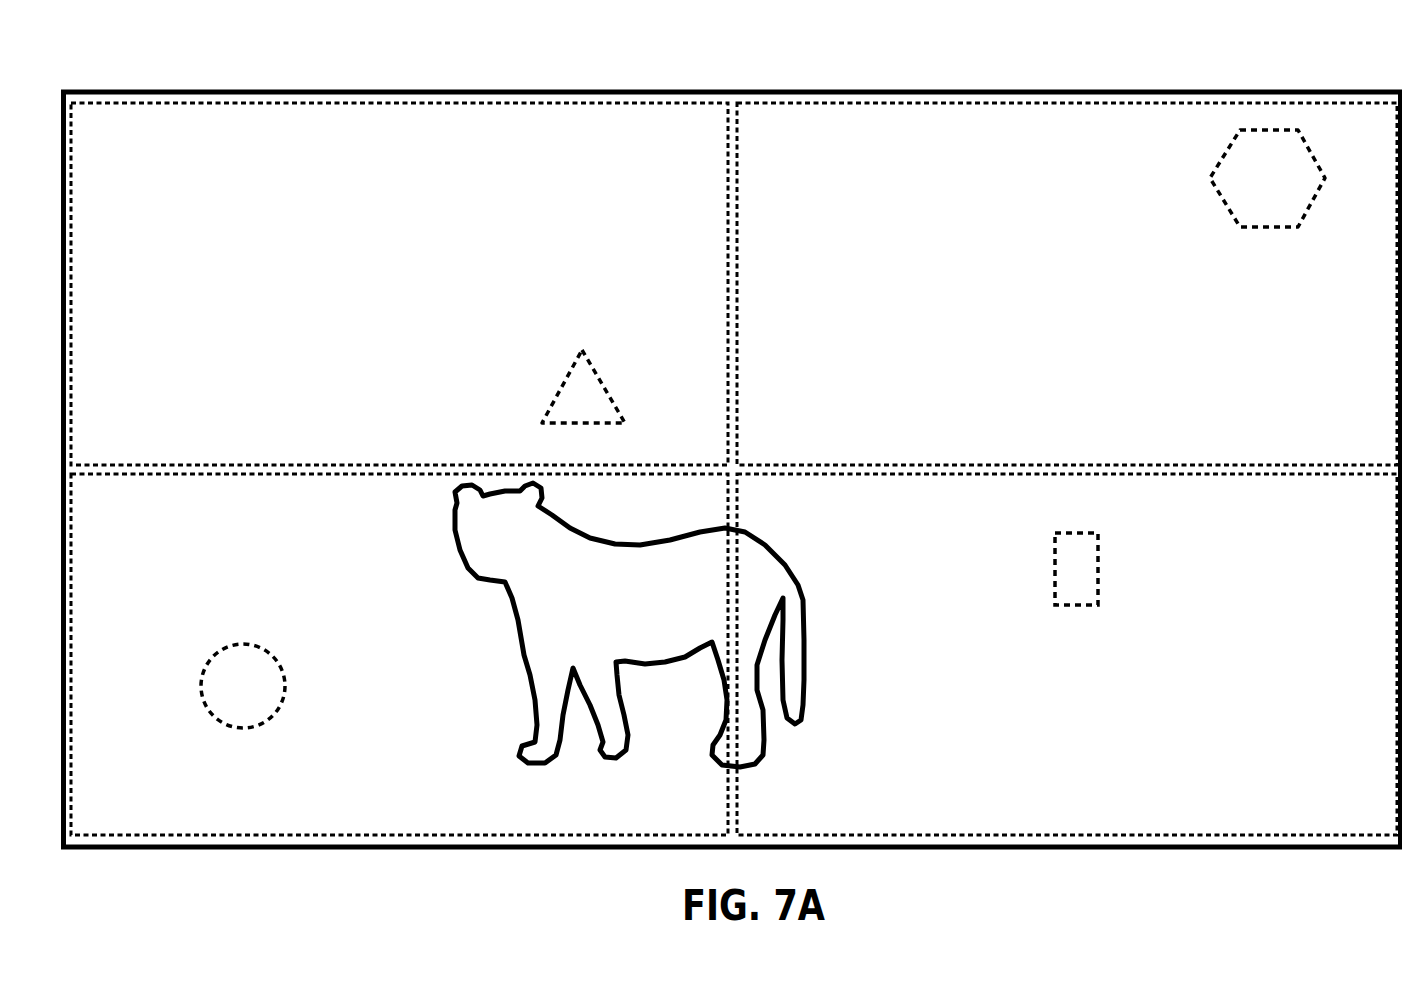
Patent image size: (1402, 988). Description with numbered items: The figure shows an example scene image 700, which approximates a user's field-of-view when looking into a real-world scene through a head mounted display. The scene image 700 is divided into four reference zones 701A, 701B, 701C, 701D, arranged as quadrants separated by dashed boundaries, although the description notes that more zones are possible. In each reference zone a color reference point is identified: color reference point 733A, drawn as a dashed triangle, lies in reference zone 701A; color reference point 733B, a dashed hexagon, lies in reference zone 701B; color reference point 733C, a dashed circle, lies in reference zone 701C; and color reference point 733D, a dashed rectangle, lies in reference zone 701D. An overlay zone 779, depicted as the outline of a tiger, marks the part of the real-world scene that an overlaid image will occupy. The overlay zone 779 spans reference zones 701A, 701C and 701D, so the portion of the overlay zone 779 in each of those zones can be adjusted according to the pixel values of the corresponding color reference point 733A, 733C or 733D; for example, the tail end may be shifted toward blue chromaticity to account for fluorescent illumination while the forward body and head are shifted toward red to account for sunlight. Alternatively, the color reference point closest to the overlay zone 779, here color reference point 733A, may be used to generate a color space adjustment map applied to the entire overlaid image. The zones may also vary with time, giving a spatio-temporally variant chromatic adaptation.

The scene image 700 is at (1330, 38).
The reference zone 701A is at (150, 454).
The reference zone 701B is at (1366, 454).
The reference zone 701C is at (160, 818).
The reference zone 701D is at (1366, 818).
The color reference point 733A is at (603, 385).
The color reference point 733B is at (1216, 165).
The color reference point 733C is at (222, 652).
The color reference point 733D is at (1099, 565).
The overlay zone 779 is at (805, 592).